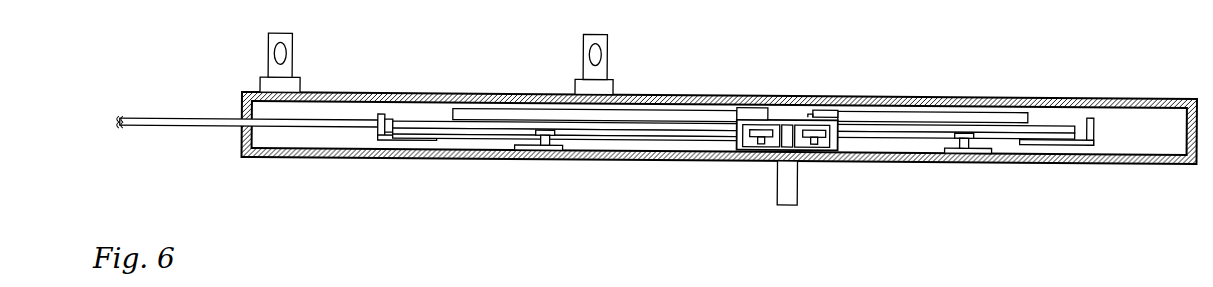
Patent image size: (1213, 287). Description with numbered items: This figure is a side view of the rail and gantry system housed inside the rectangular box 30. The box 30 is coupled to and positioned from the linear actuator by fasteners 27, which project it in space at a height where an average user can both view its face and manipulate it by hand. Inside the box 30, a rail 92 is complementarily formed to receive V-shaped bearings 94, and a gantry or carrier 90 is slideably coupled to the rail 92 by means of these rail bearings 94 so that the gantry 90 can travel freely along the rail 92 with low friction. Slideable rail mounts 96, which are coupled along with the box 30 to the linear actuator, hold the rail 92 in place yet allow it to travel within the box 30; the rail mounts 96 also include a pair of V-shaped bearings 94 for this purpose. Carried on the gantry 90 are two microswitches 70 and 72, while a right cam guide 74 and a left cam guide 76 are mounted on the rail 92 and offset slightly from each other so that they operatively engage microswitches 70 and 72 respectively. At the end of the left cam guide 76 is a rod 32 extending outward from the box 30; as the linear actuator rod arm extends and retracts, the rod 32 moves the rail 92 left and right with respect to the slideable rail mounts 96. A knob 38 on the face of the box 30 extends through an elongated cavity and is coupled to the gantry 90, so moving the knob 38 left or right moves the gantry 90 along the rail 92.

The fasteners 27 is at (285, 71).
The rectangular box 30 is at (382, 156).
The rod 32 is at (222, 123).
The knob 38 is at (792, 184).
The microswitch 70 is at (755, 109).
The microswitch 72 is at (818, 110).
The right cam guide 74 is at (925, 112).
The left cam guide 76 is at (633, 112).
The gantry 90 is at (790, 129).
The rail 92 is at (603, 137).
The V-shaped bearings 94 is at (755, 144).
The slideable rail mounts 96 is at (540, 143).